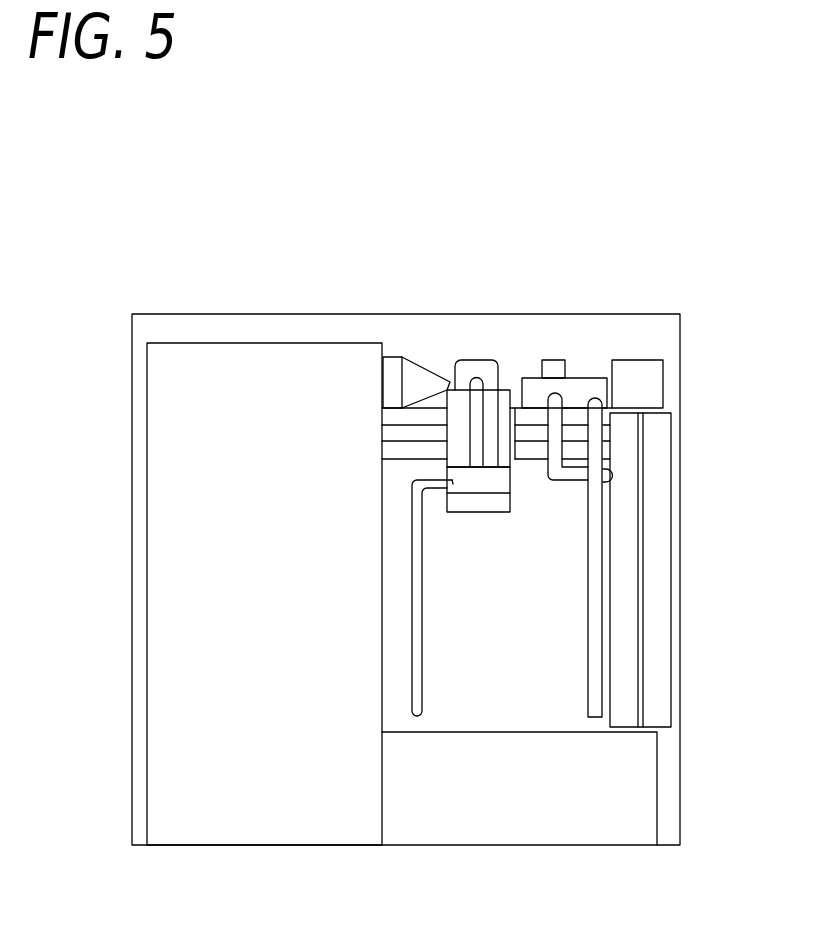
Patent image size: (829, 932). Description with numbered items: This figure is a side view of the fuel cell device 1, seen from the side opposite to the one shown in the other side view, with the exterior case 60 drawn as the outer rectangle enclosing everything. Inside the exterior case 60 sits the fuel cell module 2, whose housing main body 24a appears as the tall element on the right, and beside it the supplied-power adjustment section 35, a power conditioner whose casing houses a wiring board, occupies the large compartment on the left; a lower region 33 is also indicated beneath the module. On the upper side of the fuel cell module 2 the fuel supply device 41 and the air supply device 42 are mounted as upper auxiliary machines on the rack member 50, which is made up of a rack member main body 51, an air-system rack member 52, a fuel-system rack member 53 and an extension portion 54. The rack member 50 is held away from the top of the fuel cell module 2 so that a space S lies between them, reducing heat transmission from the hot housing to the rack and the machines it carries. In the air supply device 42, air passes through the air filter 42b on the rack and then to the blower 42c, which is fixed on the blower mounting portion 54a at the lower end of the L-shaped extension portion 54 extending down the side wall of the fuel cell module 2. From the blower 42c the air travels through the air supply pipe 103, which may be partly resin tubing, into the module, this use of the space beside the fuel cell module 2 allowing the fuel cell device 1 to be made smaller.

The fuel cell device 1 is at (618, 173).
The fuel cell module 2 is at (553, 705).
The housing main body 24a is at (577, 585).
The lower housing portion 33 is at (563, 827).
The supplied-power adjustment section 35 is at (343, 817).
The fuel supply device 41 is at (558, 362).
The air supply device 42 is at (435, 362).
The air filter 42b is at (392, 365).
The blower 42c is at (497, 477).
The rack member 50 is at (387, 435).
The rack member main body 51 is at (577, 435).
The air-system rack member 52 is at (388, 417).
The fuel-system rack member 53 is at (580, 417).
The extension portion 54 is at (458, 403).
The blower mounting portion 54a is at (505, 505).
The exterior case 60 is at (662, 314).
The air supply pipe 103 is at (415, 620).
The space S is at (582, 452).